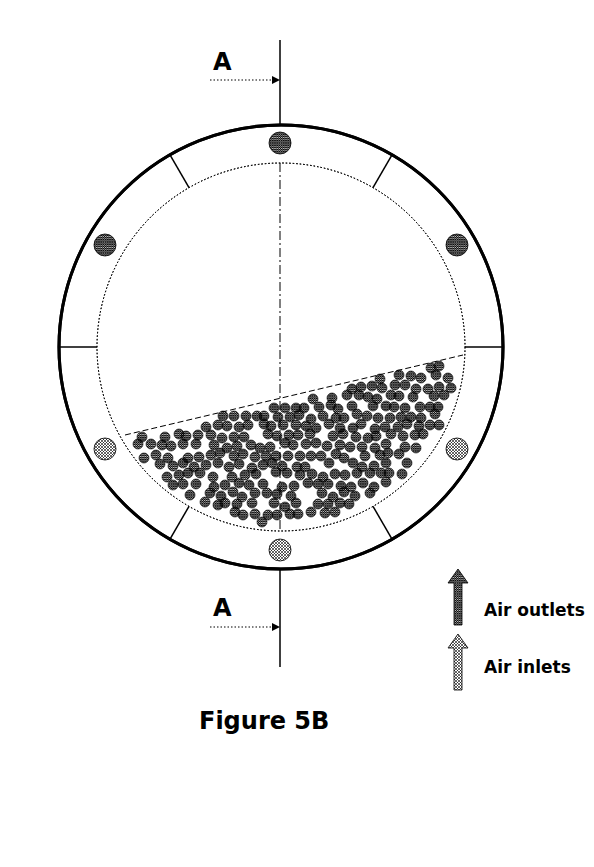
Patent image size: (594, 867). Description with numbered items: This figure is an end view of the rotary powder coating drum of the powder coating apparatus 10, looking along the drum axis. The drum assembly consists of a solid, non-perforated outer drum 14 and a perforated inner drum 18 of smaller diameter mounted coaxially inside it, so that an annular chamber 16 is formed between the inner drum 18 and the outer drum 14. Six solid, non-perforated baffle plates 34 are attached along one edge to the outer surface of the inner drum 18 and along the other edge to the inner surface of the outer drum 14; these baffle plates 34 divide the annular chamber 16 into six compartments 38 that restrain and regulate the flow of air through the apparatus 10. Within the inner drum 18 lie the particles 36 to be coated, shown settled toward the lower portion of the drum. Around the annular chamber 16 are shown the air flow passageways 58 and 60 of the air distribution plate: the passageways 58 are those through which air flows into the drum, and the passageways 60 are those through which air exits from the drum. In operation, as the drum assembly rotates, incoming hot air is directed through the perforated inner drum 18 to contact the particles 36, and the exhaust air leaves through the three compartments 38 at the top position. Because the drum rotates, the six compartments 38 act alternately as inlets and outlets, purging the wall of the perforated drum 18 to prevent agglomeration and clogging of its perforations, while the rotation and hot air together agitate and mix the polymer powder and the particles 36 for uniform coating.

The powder coating apparatus 10 is at (5, 85).
The outer drum 14 is at (428, 167).
The annular chamber 16 is at (478, 298).
The perforated inner drum 18 is at (402, 210).
The baffle plates 34 is at (180, 177).
The particles 36 is at (222, 405).
The compartments 38 is at (217, 147).
The air flow passageways (inlets) 58 is at (102, 466).
The air flow passageways (outlets) 60 is at (103, 232).